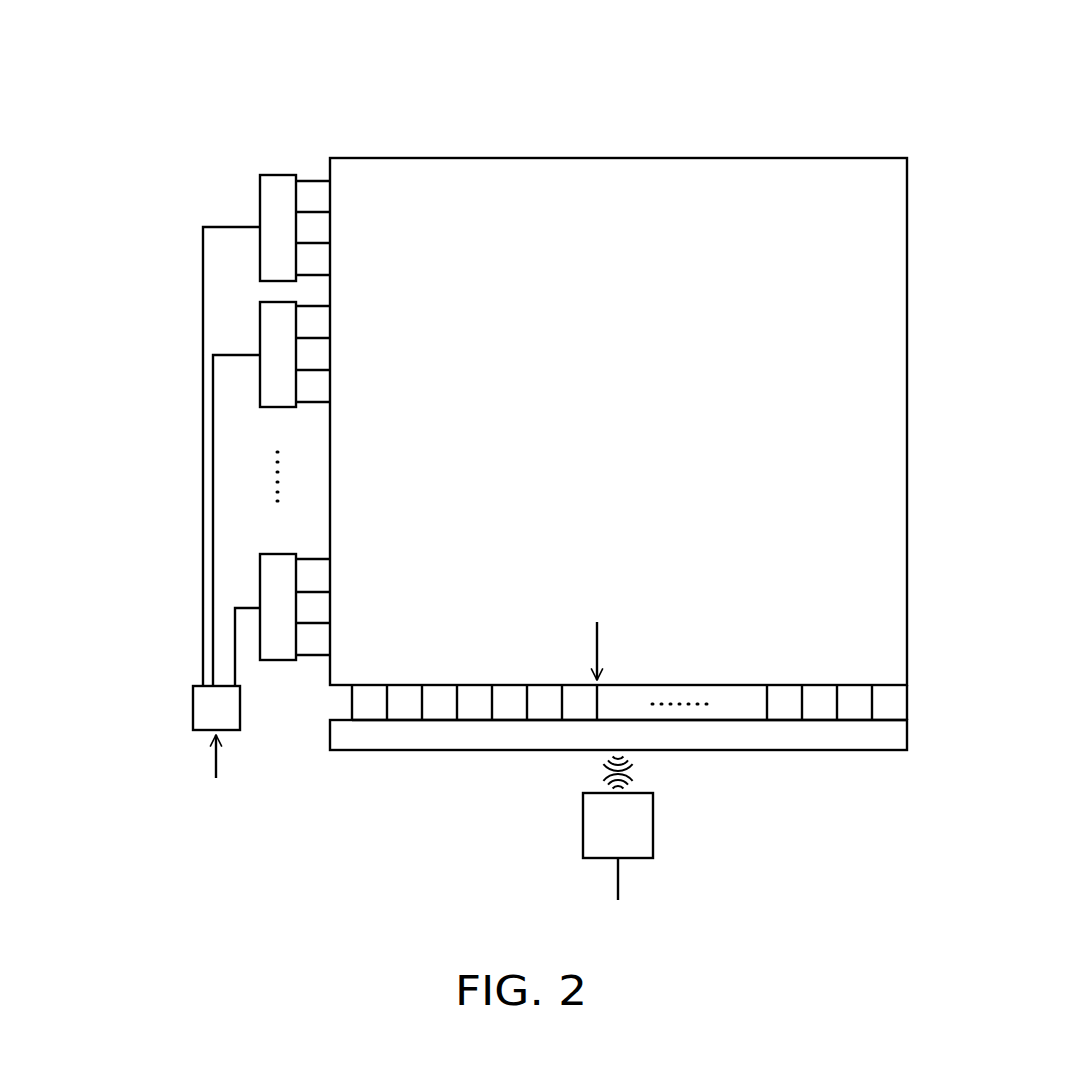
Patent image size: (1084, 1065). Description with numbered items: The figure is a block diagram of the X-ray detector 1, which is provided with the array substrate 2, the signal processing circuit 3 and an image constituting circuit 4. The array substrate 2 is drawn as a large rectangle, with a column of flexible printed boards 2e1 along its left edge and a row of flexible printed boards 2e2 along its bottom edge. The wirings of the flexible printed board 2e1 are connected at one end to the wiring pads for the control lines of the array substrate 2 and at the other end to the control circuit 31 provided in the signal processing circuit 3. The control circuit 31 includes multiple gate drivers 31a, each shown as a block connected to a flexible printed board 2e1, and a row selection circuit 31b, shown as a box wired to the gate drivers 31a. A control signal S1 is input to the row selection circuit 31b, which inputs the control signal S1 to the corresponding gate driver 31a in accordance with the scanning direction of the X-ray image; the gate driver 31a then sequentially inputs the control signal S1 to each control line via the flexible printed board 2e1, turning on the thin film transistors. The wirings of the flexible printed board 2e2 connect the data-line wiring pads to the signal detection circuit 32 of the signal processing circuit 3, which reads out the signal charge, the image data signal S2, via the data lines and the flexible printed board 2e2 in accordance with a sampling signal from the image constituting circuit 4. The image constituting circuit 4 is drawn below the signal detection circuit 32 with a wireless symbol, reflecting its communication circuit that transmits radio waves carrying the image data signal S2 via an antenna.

The X-ray detector 1 is at (928, 99).
The array substrate 2 is at (686, 139).
The flexible printed board 2e1 is at (313, 175).
The flexible printed board 2e2 is at (347, 703).
The signal processing circuit 3 is at (475, 563).
The control circuit 31 is at (169, 452).
The gate driver 31a is at (277, 576).
The row selection circuit 31b is at (167, 708).
The signal detection circuit 32 is at (381, 742).
The image constituting circuit 4 is at (625, 826).
The control signal S1 is at (213, 757).
The image data signal S2 is at (599, 637).